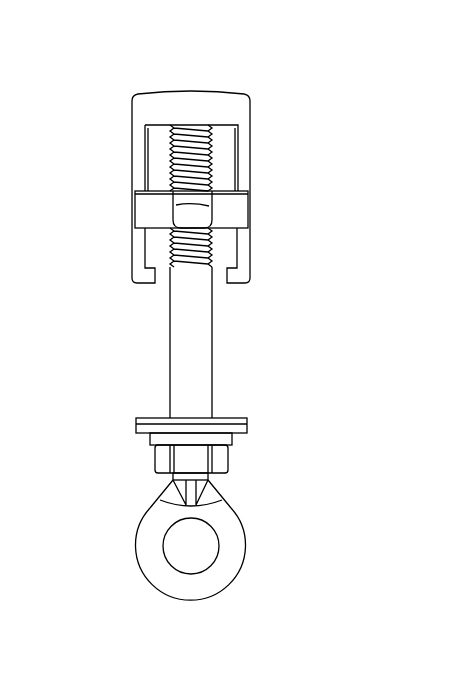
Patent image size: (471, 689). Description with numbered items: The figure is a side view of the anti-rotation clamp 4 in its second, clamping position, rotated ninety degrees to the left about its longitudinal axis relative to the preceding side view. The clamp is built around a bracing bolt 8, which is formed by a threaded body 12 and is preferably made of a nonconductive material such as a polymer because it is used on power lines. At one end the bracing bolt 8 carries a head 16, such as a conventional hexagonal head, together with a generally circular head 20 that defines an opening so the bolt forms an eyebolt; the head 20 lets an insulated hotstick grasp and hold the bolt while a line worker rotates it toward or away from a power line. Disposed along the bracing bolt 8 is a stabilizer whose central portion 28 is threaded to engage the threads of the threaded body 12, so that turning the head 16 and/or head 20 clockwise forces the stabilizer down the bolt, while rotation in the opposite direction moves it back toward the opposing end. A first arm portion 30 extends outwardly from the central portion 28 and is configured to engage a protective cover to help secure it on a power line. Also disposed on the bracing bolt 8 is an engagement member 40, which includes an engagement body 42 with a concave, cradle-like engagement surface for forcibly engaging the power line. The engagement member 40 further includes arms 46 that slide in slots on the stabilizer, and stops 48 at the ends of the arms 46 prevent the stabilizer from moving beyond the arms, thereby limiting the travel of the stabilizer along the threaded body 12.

The anti-rotation clamp 4 is at (96, 46).
The bracing bolt 8 is at (182, 363).
The threaded body 12 is at (200, 347).
The head 16 is at (210, 458).
The head 20 is at (245, 543).
The central portion 28 is at (214, 212).
The first arm portion 30 is at (172, 213).
The engagement member 40 is at (240, 97).
The engagement body 42 is at (177, 98).
The arms 46 is at (132, 160).
The stops 48 is at (129, 279).